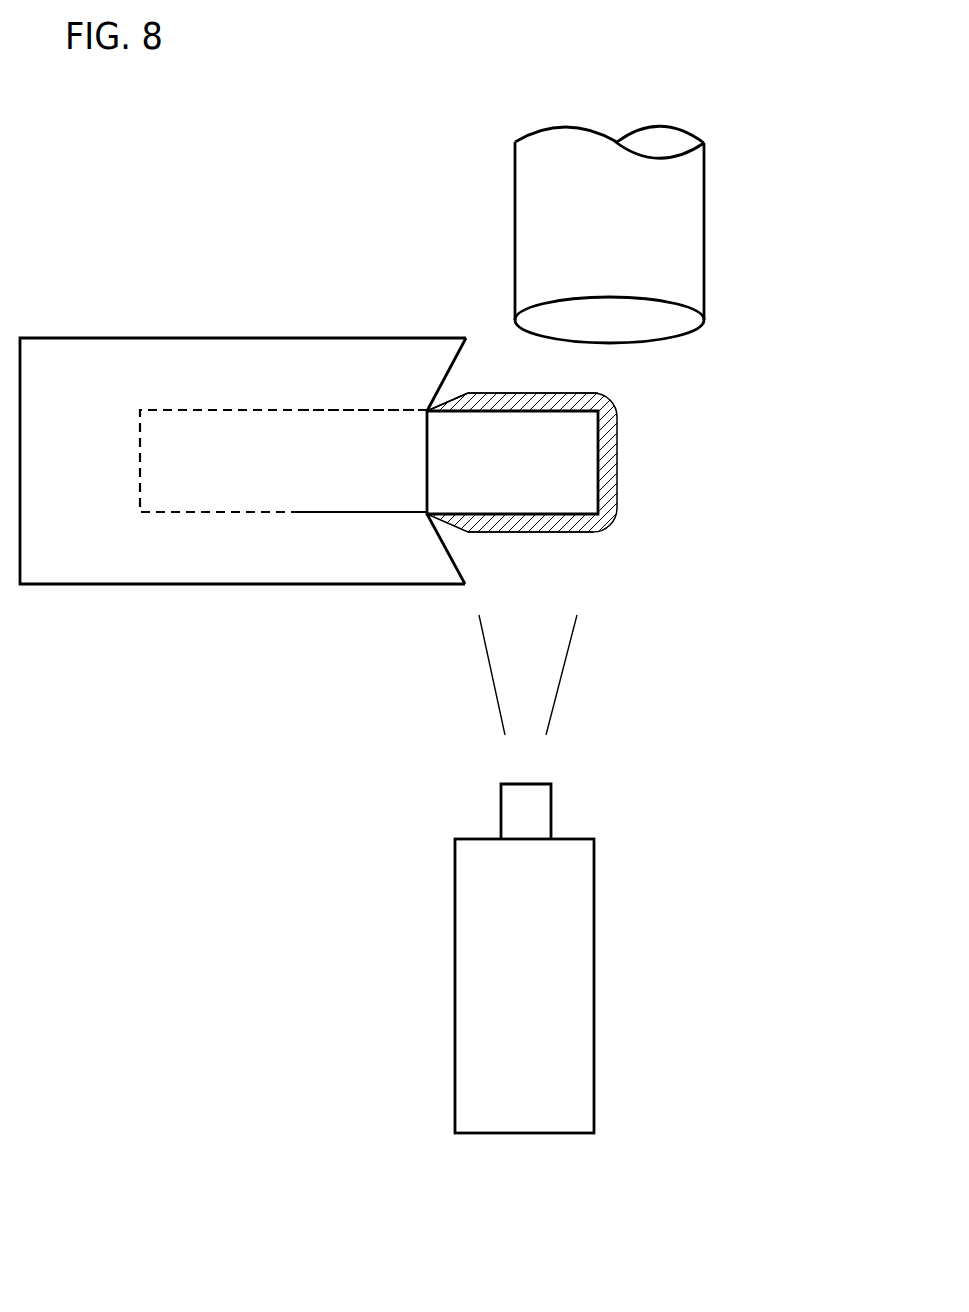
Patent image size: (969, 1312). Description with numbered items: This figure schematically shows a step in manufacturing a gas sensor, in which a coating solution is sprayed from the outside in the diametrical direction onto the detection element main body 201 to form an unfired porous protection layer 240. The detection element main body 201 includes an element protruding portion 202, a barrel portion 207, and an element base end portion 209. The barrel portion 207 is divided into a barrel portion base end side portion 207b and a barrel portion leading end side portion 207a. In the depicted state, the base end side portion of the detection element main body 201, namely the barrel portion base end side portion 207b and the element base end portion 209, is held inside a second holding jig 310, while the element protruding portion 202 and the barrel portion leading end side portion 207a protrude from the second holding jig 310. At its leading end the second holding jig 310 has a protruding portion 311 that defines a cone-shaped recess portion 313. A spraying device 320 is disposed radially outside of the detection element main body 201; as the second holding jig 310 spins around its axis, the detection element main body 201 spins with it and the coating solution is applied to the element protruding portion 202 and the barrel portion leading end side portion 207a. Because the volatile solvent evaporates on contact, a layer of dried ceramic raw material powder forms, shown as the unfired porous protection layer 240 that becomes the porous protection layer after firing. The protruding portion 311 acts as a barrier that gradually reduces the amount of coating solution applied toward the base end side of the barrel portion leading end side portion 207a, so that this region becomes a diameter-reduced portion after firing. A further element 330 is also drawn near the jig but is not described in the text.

The second holding jig 310 is at (232, 347).
The cone-shaped recess portion 313 is at (448, 377).
The protruding portion 311 is at (448, 570).
The element base end portion 209 is at (182, 452).
The barrel portion 207 is at (444, 331).
The barrel portion leading end side portion 207a is at (437, 458).
The barrel portion base end side portion 207b is at (348, 457).
The unfired porous protection layer 240 is at (620, 445).
The element protruding portion 202 is at (563, 480).
The detection element main body 201 is at (525, 487).
The roller 330 is at (688, 238).
The spraying device 320 is at (580, 990).